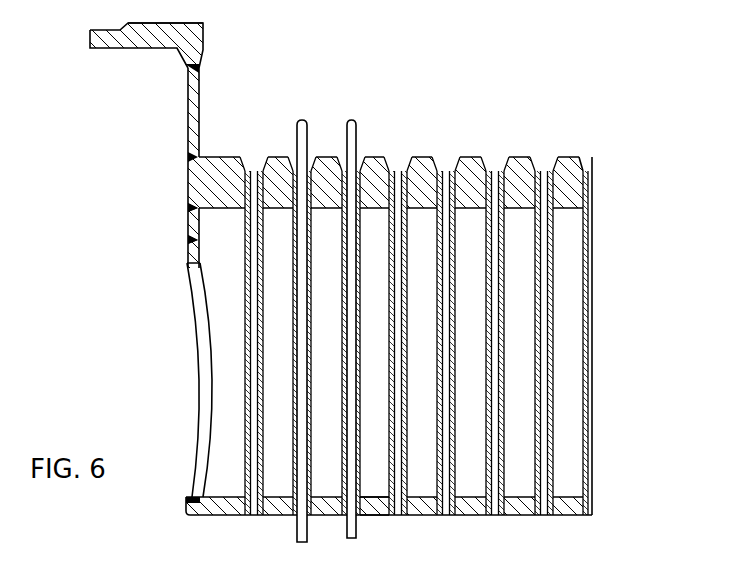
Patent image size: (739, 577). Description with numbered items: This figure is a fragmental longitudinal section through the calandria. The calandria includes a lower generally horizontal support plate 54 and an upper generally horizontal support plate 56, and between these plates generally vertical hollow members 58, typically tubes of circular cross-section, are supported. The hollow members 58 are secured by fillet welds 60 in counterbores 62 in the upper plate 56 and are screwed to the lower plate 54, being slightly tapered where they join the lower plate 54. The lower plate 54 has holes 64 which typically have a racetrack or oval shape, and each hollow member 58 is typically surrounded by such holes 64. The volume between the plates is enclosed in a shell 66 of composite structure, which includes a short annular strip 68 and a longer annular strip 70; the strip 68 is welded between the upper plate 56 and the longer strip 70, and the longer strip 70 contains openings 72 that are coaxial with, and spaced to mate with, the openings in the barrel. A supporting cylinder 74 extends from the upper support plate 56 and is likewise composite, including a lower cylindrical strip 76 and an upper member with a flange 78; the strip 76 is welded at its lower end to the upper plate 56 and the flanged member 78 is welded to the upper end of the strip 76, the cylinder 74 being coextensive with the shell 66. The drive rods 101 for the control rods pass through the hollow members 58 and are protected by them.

The lower support plate 54 is at (455, 514).
The upper support plate 56 is at (470, 172).
The hollow members 58 is at (404, 272).
The fillet welds 60 is at (262, 166).
The counterbores 62 is at (553, 168).
The holes 64 is at (373, 512).
The shell 66 is at (182, 268).
The short annular strip 68 is at (188, 221).
The longer annular strip 70 is at (188, 250).
The openings 72 is at (199, 413).
The supporting cylinder 74 is at (206, 25).
The lower cylindrical strip 76 is at (199, 88).
The flange 78 is at (90, 34).
The drive rods 101 is at (346, 143).